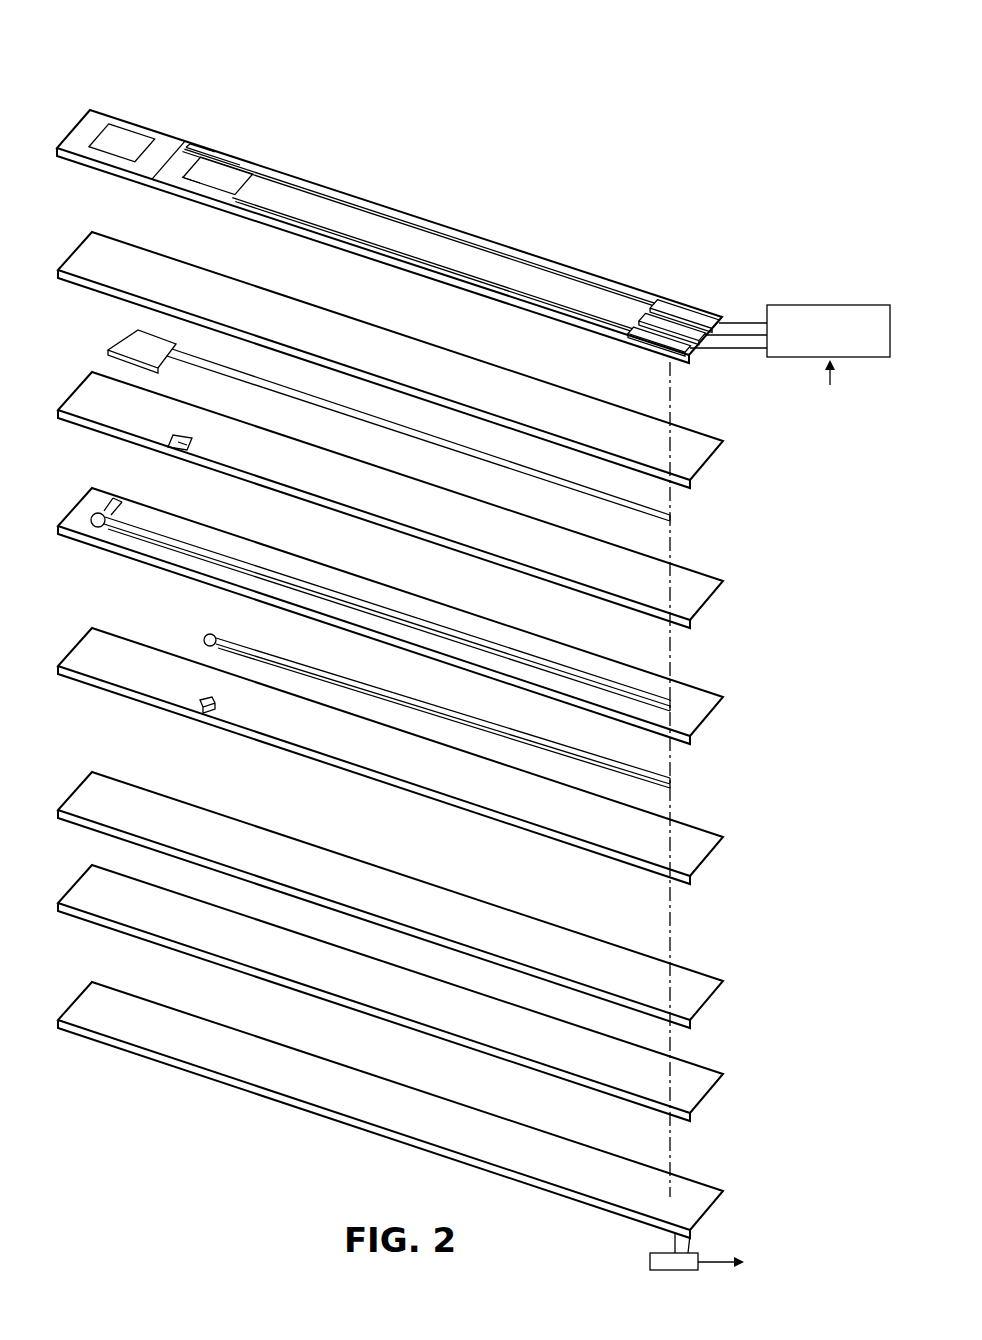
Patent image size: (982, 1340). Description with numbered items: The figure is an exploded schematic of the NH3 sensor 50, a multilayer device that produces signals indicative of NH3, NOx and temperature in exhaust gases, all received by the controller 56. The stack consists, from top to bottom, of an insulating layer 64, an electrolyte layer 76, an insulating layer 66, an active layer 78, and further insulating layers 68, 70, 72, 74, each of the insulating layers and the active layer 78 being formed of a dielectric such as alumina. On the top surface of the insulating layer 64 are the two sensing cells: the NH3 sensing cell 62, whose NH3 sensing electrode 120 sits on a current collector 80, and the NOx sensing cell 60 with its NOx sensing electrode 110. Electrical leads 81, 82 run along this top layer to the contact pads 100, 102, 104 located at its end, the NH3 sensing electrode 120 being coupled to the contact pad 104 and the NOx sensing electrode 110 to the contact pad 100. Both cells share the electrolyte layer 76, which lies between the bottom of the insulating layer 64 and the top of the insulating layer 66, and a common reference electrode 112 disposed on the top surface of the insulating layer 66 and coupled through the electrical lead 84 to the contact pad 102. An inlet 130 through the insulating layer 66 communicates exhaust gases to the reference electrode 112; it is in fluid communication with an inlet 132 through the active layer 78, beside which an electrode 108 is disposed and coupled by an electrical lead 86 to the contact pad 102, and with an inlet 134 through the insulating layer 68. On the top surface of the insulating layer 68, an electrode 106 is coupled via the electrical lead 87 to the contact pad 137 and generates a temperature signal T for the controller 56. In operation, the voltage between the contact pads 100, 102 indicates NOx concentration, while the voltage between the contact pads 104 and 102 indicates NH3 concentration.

The NH3 sensor 50 is at (466, 643).
The controller 56 is at (828, 296).
The NOx sensing cell 60 is at (198, 162).
The NH3 sensing cell 62 is at (100, 128).
The insulating layer 64 is at (405, 216).
The insulating layer 66 is at (409, 500).
The insulating layer 68 is at (409, 756).
The insulating layer 70 is at (409, 900).
The insulating layer 72 is at (409, 993).
The insulating layer 74 is at (409, 1110).
The electrolyte layer 76 is at (409, 360).
The active layer 78 is at (409, 616).
The current collector 80 is at (168, 125).
The electrical lead 81 is at (418, 227).
The electrical lead 82 is at (432, 264).
The electrical lead 84 is at (460, 435).
The electrical lead 86 is at (387, 614).
The electrical lead 87 is at (469, 713).
The contact pad 100 is at (627, 352).
The contact pad 102 is at (678, 271).
The contact pad 104 is at (707, 281).
The electrode 106 is at (176, 621).
The electrode 108 is at (93, 563).
The NOx sensing electrode 110 is at (195, 193).
The reference electrode 112 is at (114, 336).
The NH3 sensing electrode 120 is at (100, 163).
The inlet 130 is at (223, 475).
The inlet 132 is at (82, 484).
The inlet 134 is at (147, 718).
The contact pad 137 is at (732, 1245).